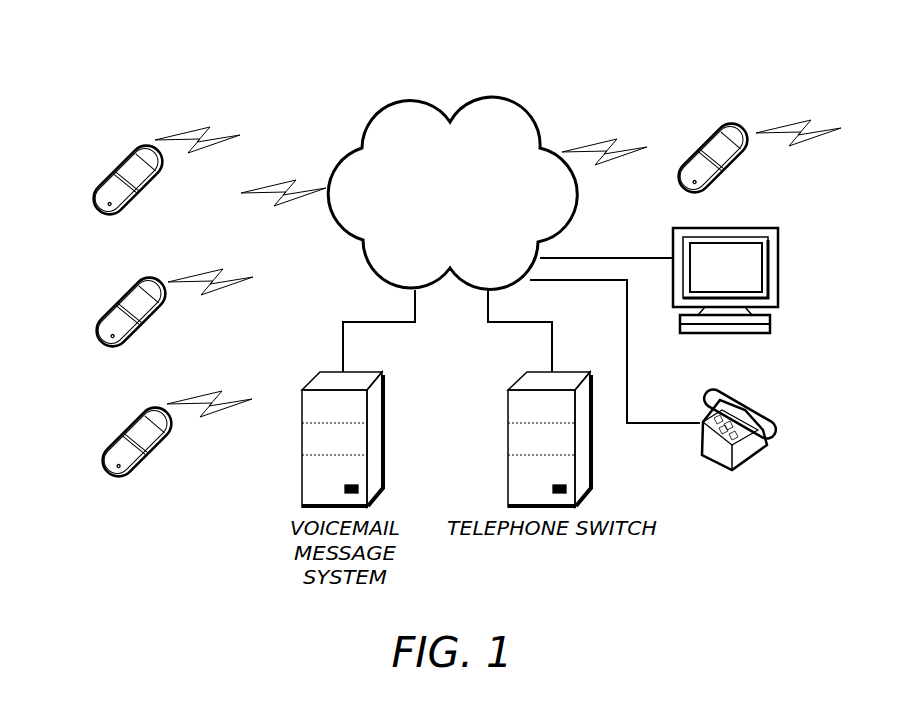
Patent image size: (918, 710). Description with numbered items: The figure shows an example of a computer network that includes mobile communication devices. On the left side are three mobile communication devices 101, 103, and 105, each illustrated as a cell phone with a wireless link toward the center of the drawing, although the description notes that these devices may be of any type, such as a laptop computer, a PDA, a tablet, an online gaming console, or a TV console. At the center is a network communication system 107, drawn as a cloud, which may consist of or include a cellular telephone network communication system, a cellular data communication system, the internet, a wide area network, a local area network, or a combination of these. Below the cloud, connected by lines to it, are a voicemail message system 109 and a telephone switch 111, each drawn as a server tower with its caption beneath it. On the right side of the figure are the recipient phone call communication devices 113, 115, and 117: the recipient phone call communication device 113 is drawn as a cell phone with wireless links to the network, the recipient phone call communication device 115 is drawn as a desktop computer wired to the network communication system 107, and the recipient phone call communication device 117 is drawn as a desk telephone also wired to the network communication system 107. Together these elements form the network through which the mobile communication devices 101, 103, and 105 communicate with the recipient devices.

The mobile communication device 101 is at (117, 180).
The mobile communication device 103 is at (117, 312).
The mobile communication device 105 is at (123, 443).
The network communication system 107 is at (412, 98).
The voicemail message system 109 is at (318, 372).
The telephone switch 111 is at (527, 372).
The recipient phone call communication device 113 is at (710, 130).
The recipient phone call communication device 115 is at (727, 228).
The recipient phone call communication device 117 is at (730, 393).